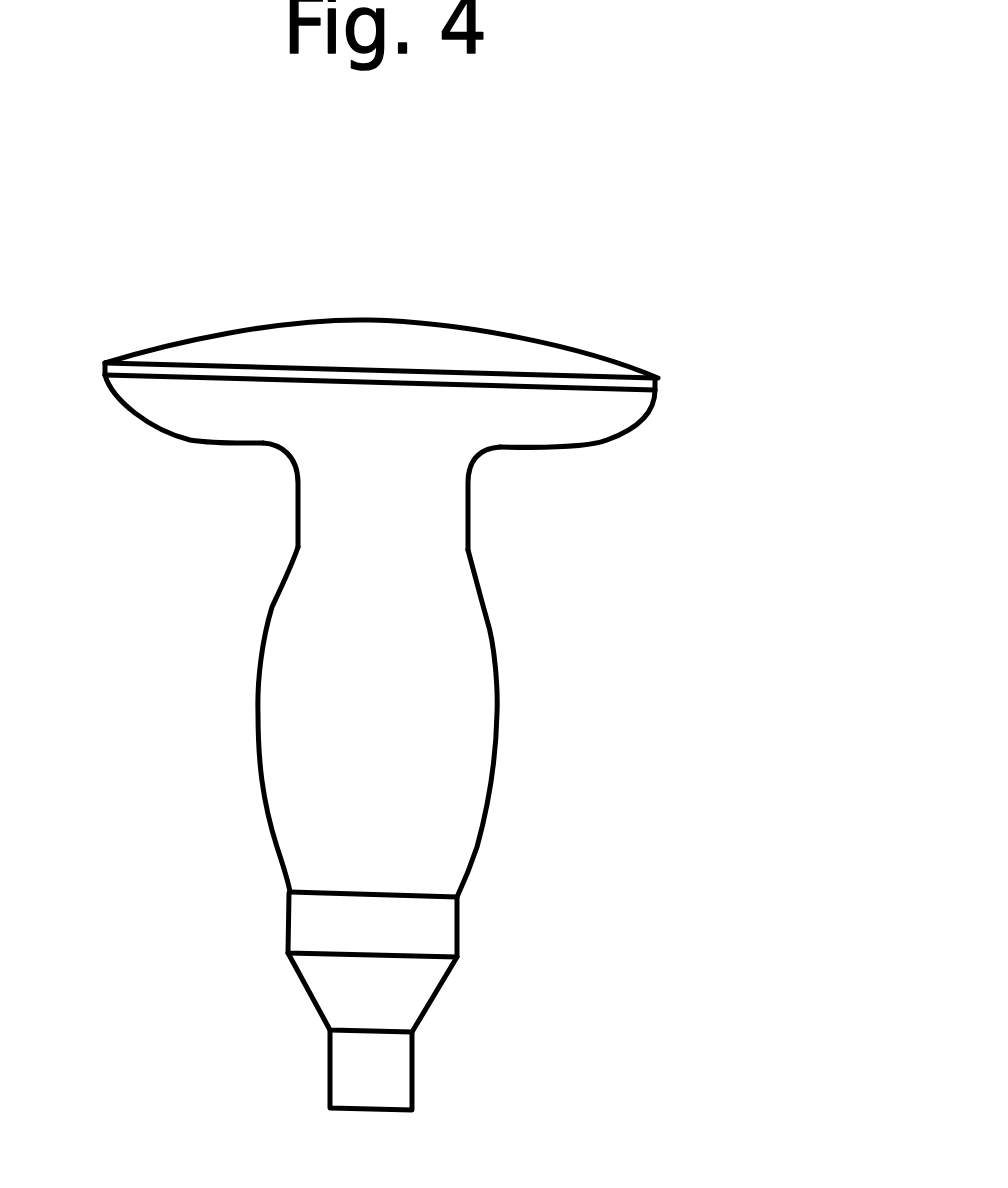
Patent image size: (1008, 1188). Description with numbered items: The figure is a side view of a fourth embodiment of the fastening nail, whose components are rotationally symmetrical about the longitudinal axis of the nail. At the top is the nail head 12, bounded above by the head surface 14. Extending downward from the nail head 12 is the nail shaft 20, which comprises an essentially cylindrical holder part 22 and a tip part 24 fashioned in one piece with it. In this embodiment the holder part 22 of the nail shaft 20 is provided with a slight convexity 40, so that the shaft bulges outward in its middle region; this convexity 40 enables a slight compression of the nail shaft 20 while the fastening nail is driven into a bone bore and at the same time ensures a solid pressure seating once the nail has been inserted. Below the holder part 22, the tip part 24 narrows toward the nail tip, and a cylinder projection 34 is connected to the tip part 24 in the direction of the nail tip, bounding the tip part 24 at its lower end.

The nail head 12 is at (507, 313).
The head surface 14 is at (512, 330).
The nail shaft 20 is at (541, 670).
The holder part 22 is at (420, 855).
The tip part 24 is at (535, 1018).
The cylinder projection 34 is at (373, 1080).
The convexity 40 is at (242, 802).